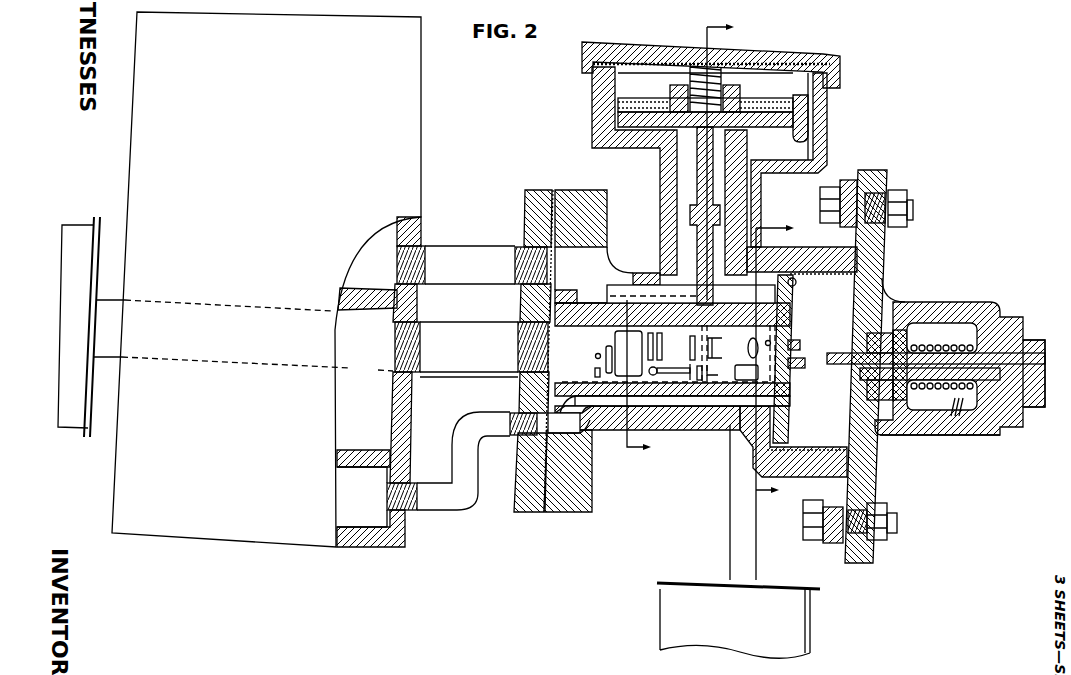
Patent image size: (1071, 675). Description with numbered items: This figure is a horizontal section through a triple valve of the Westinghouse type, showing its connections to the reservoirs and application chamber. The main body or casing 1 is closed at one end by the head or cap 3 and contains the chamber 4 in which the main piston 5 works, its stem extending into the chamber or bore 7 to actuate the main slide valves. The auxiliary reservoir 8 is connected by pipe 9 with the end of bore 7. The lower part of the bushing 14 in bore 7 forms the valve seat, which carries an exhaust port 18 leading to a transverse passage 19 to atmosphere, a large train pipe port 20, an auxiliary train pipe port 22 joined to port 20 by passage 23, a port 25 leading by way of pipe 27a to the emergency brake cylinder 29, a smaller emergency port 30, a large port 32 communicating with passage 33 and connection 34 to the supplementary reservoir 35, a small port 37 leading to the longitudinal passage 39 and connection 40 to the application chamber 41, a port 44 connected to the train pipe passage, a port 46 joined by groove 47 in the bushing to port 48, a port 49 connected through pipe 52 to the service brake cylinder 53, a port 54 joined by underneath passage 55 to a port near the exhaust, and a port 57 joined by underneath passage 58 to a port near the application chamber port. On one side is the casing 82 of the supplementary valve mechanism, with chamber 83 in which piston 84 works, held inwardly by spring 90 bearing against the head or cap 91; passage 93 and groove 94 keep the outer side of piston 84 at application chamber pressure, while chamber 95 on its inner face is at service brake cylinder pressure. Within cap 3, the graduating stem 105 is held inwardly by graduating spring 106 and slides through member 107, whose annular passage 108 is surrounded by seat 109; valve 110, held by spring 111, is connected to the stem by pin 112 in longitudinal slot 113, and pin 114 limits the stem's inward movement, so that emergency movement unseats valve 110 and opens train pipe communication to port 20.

The main body or casing portion 1 is at (610, 422).
The head or cap 3 is at (886, 266).
The chamber 4 is at (742, 239).
The main piston 5 is at (794, 313).
The chamber or bore 7 is at (538, 351).
The auxiliary reservoir 8 is at (266, 279).
The pipe 9 is at (471, 347).
The bushing 14 is at (787, 415).
The exhaust port 18 is at (723, 352).
The transverse passage 19 is at (720, 432).
The train pipe port 20 is at (751, 346).
The auxiliary train pipe port 22 is at (606, 352).
The passage 23 is at (604, 330).
The port 25 is at (746, 372).
The pipe 27a is at (740, 537).
The emergency brake cylinder 29 is at (738, 620).
The port 30 is at (636, 345).
The port 32 is at (628, 353).
The passage 33 is at (645, 290).
The connection 34 is at (472, 265).
The supplementary reservoir 35 is at (379, 269).
The port 37 is at (704, 374).
The longitudinal passage 39 is at (672, 465).
The connection 40 is at (462, 461).
The application chamber 41 is at (374, 459).
The port 44 is at (792, 345).
The port 46 is at (792, 365).
The groove 47 is at (720, 422).
The port 48 is at (595, 371).
The port 49 is at (596, 356).
The pipe 52 is at (486, 378).
The service brake cylinder 53 is at (60, 312).
The port 54 is at (662, 341).
The underneath passage 55 is at (664, 370).
The port 57 is at (645, 363).
The underneath passage 58 is at (686, 440).
The casing 82 is at (830, 145).
The chamber 83 is at (711, 75).
The piston 84 is at (665, 128).
The spring 90 is at (716, 73).
The head or cap 91 is at (770, 49).
The passage 93 is at (815, 118).
The groove 94 is at (798, 284).
The chamber 95 is at (712, 216).
The graduating stem 105 is at (840, 354).
The graduating spring 106 is at (1020, 408).
The member 107 is at (847, 380).
The annular passage 108 is at (900, 405).
The seat 109 is at (901, 327).
The valve 110 is at (936, 327).
The spring 111 is at (962, 409).
The pin 112 is at (925, 349).
The longitudinal slot 113 is at (960, 349).
The pin 114 is at (962, 436).